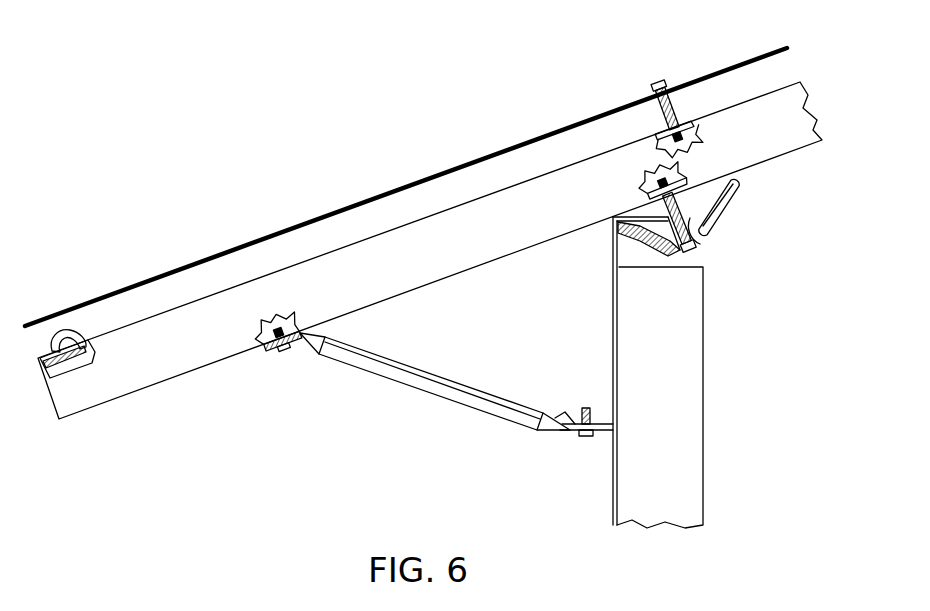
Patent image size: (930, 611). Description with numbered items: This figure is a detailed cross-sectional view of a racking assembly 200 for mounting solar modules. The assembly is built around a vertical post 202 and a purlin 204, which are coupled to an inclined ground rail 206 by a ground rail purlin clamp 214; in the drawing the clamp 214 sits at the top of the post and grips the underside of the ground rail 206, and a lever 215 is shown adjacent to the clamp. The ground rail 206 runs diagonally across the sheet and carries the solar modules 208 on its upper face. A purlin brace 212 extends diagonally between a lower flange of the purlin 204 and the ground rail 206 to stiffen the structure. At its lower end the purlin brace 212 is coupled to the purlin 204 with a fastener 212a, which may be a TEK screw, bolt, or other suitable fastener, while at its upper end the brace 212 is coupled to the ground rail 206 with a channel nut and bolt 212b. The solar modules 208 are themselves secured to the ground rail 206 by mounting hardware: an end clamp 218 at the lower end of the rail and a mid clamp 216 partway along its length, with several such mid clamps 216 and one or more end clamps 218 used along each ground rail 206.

The racking assembly 200 is at (243, 152).
The post 202 is at (704, 455).
The purlin 204 is at (612, 252).
The ground rail 206 is at (753, 167).
The solar modules 208 is at (200, 260).
The purlin brace 212 is at (420, 396).
The fastener 212a is at (585, 437).
The channel nut and bolt 212b is at (282, 353).
The ground rail purlin clamp 214 is at (727, 225).
The lever 215 is at (710, 230).
The mid clamps 216 is at (655, 92).
The end clamps 218 is at (88, 340).